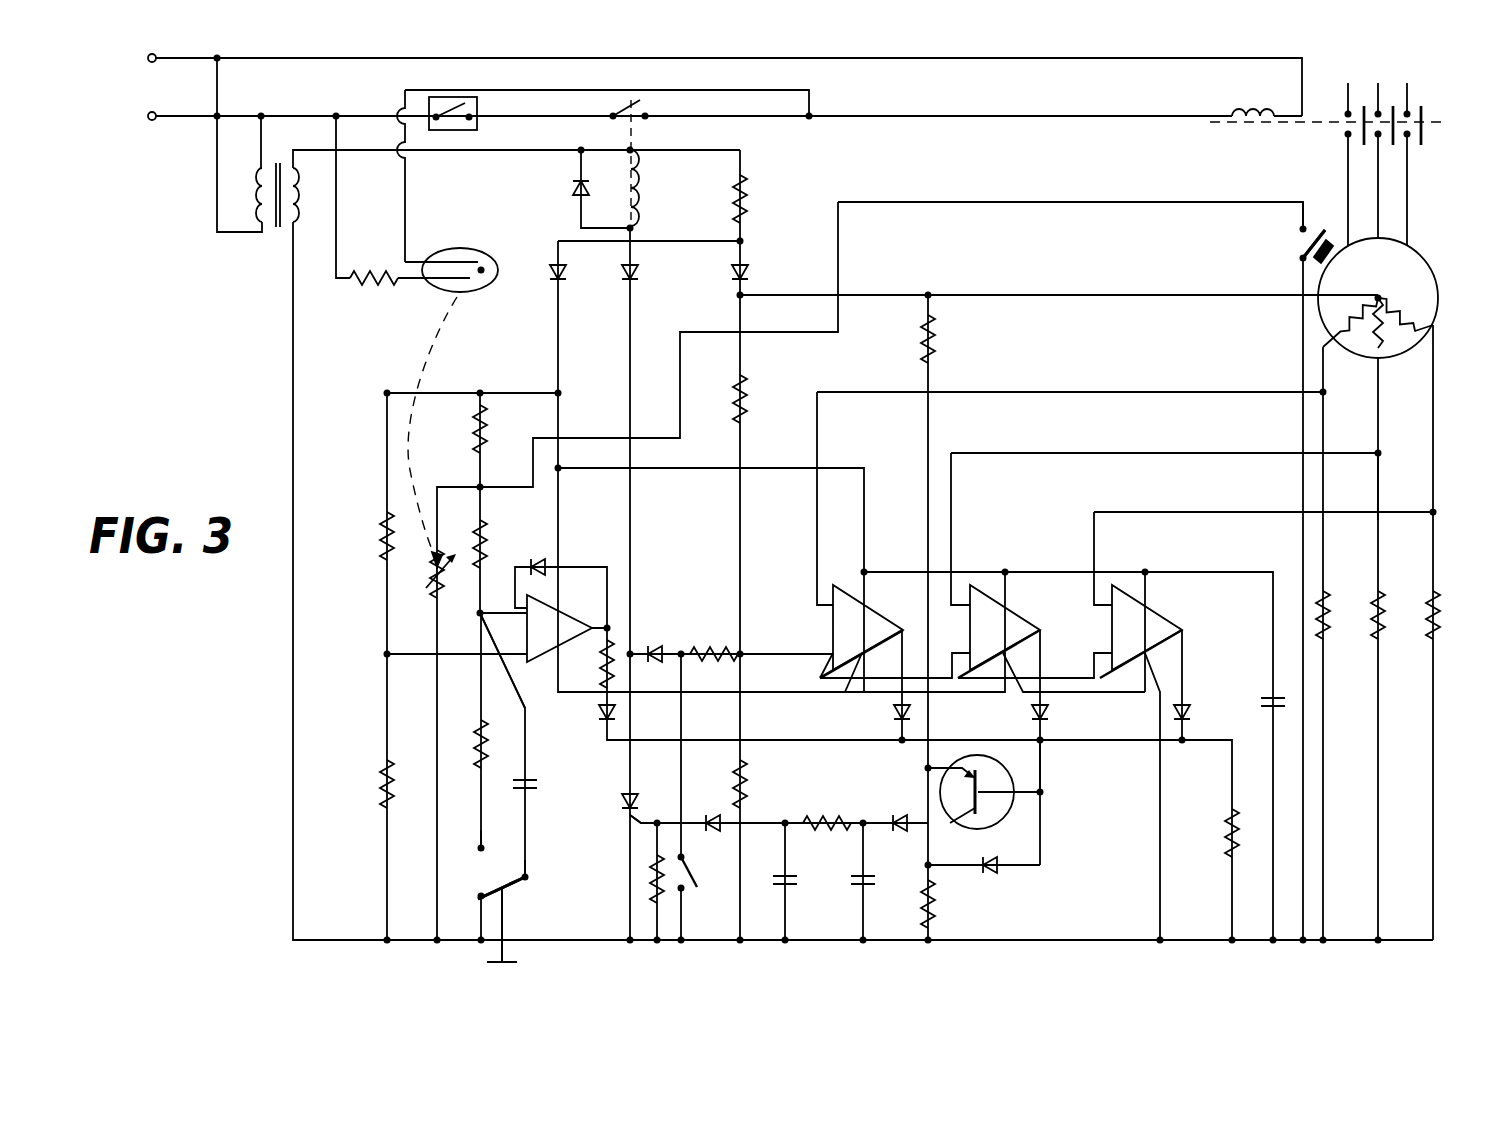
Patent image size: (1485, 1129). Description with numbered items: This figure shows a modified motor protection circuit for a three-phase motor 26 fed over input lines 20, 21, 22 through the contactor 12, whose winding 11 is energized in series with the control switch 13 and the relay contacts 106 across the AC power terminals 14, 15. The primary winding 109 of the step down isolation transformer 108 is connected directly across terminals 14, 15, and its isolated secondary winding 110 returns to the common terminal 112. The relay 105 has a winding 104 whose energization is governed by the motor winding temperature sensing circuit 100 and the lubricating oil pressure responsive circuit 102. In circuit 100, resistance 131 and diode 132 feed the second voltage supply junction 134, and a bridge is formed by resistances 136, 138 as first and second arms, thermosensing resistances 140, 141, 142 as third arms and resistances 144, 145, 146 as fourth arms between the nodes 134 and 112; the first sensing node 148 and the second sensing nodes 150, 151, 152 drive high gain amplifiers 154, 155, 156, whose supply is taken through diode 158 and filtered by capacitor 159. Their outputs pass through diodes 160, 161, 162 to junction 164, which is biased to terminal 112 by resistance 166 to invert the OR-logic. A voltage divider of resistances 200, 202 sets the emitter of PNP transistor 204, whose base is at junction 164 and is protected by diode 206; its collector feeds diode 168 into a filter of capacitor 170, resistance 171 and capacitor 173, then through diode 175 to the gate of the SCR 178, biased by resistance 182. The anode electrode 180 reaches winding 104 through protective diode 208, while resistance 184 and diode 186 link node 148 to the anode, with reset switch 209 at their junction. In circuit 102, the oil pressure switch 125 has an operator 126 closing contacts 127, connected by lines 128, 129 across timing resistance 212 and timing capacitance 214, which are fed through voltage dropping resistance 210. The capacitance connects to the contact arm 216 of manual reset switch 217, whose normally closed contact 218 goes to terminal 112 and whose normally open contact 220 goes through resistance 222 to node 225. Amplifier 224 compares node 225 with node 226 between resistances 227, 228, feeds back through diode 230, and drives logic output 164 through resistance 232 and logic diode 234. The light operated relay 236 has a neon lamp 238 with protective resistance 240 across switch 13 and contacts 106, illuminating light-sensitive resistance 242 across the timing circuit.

The winding of contactor 11 is at (1257, 87).
The contactor 12 is at (1318, 136).
The control switch 13 is at (478, 113).
The AC power terminal 14 is at (156, 63).
The AC power terminal 15 is at (156, 121).
The input line 20 is at (1346, 95).
The input line 21 is at (1390, 84).
The input line 22 is at (1412, 95).
The three-phase motor 26 is at (1433, 270).
The motor winding temperature sensing circuit 100 is at (895, 290).
The lubricating oil pressure responsive circuit 102 is at (521, 300).
The relay winding 104 is at (641, 192).
The relay 105 is at (636, 138).
The relay contacts 106 is at (648, 105).
The step down isolation transformer 108 is at (283, 233).
The primary winding 109 is at (263, 200).
The secondary winding 110 is at (296, 204).
The ground or common terminal 112 is at (575, 942).
The oil pressure sensing switch 125 is at (1291, 278).
The operator 126 is at (1318, 236).
The contacts 127 is at (1300, 240).
The electrical line 128 is at (1303, 352).
The electrical line 129 is at (583, 440).
The resistance 131 is at (748, 194).
The diode 132 is at (750, 275).
The second voltage supply junction 134 is at (963, 293).
The resistance 136 is at (748, 392).
The resistance 138 is at (748, 778).
The thermosensing resistance 140 is at (1360, 343).
The thermosensing resistance 141 is at (1395, 350).
The thermosensing resistance 142 is at (1425, 325).
The resistance 144 is at (1332, 640).
The resistance 145 is at (1385, 638).
The resistance 146 is at (1440, 630).
The first sensing node 148 is at (748, 652).
The second sensing node 150 is at (1330, 448).
The second sensing node 151 is at (1380, 455).
The second sensing node 152 is at (1435, 512).
The high gain amplifier 154 is at (870, 635).
The high gain amplifier 155 is at (1010, 635).
The high gain amplifier 156 is at (1152, 635).
The diode 158 is at (566, 272).
The filter capacitor 159 is at (1270, 700).
The diode 160 is at (892, 714).
The diode 161 is at (1050, 714).
The diode 162 is at (1191, 714).
The junction 164 is at (1038, 740).
The biasing resistance 166 is at (1224, 826).
The diode 168 is at (898, 814).
The capacitor 170 is at (873, 882).
The resistance 171 is at (808, 820).
The capacitor 173 is at (797, 880).
The diode 175 is at (710, 816).
The SCR 178 is at (620, 812).
The anode electrode 180 is at (628, 790).
The bias resistance 182 is at (650, 882).
The resistance 184 is at (714, 645).
The diode 186 is at (655, 644).
The resistance 200 is at (935, 348).
The resistance 202 is at (945, 904).
The PNP transistor 204 is at (1012, 778).
The diode 206 is at (1000, 875).
The diode 208 is at (640, 275).
The thermal-sensing-circuit-reset switch 209 is at (693, 893).
The voltage dropping resistance 210 is at (487, 437).
The timing resistance 212 is at (488, 545).
The timing capacitance 214 is at (536, 786).
The contact arm 216 is at (527, 880).
The manual reset switch 217 is at (512, 922).
The normally closed contact 218 is at (480, 898).
The normally open contact 220 is at (478, 852).
The resistance 222 is at (478, 745).
The high gain amplifier 224 is at (567, 625).
The junction or node 225 is at (480, 613).
The junction or node 226 is at (385, 654).
The resistance 227 is at (382, 545).
The resistance 228 is at (382, 785).
The diode 230 is at (542, 560).
The series resistance 232 is at (600, 684).
The logic diode 234 is at (597, 722).
The light operated relay 236 is at (440, 248).
The neon lamp 238 is at (428, 290).
The protective resistance 240 is at (362, 270).
The light-sensitive resistance 242 is at (423, 585).